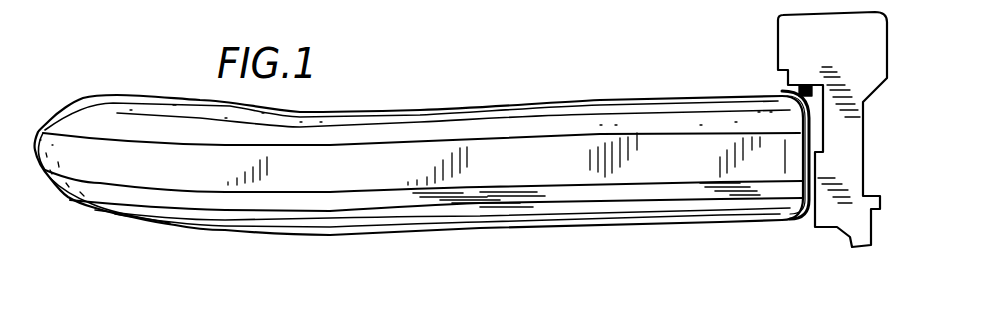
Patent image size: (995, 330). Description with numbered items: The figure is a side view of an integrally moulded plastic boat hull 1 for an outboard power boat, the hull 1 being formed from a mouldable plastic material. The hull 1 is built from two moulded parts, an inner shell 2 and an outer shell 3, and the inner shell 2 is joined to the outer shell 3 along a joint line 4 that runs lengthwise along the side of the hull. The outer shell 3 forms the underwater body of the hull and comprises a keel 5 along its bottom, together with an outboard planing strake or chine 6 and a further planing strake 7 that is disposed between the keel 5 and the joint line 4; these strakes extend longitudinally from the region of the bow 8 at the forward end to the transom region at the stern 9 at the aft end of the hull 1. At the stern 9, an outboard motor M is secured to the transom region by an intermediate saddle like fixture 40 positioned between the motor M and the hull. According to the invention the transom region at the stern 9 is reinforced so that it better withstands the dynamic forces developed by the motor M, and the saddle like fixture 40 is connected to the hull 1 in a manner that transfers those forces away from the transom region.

The boat hull 1 is at (472, 82).
The inner shell 2 is at (735, 97).
The outer shell 3 is at (672, 167).
The joint line 4 is at (412, 143).
The keel 5 is at (472, 228).
The outboard planing strake or chine 6 is at (320, 202).
The planing strake 7 is at (407, 210).
The bow 8 is at (78, 202).
The stern or transom region 9 is at (812, 167).
The saddle like fixture 40 is at (802, 85).
The outboard motor M is at (863, 62).